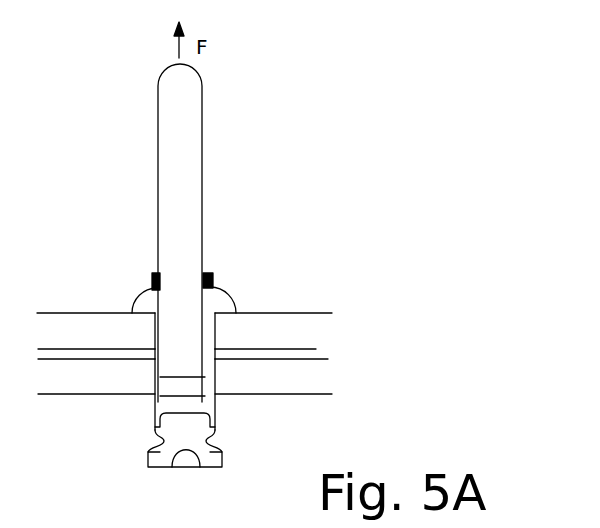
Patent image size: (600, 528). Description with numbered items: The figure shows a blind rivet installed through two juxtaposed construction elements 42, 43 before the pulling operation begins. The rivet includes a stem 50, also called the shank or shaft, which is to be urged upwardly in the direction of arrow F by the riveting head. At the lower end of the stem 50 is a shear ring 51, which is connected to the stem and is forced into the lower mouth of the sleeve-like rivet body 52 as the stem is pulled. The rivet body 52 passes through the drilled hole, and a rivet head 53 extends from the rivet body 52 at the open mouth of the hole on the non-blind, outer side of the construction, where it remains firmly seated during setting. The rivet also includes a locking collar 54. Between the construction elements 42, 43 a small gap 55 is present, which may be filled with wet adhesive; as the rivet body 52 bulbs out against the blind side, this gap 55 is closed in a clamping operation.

The stem 50 is at (197, 153).
The shear ring 51 is at (208, 462).
The rivet body 52 is at (215, 408).
The rivet head 53 is at (226, 300).
The locking collar 54 is at (153, 284).
The construction element 42 is at (300, 337).
The construction element 43 is at (300, 384).
The gap 55 is at (316, 349).